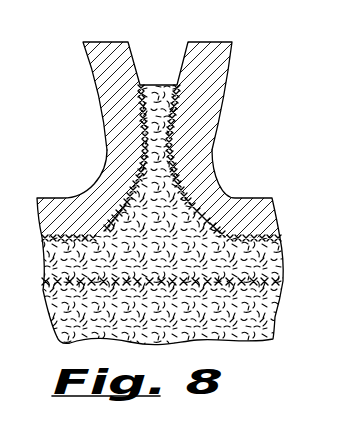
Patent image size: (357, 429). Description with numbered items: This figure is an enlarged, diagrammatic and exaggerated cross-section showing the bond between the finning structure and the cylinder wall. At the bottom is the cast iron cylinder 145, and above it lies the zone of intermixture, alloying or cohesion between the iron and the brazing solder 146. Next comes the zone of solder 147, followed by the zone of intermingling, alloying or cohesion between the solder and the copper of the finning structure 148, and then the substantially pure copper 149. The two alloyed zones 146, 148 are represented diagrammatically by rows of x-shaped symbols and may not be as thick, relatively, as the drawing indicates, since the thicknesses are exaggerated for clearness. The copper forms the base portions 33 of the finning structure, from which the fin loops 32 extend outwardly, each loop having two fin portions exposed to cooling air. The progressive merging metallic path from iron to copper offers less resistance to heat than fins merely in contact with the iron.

The fin loop 32 is at (183, 62).
The base portion 33 is at (48, 197).
The substantially pure copper 149 is at (227, 198).
The zone of intermingling between solder and copper 148 is at (280, 238).
The zone of solder 147 is at (283, 259).
The zone of intermixture between iron and solder 146 is at (281, 282).
The cast iron cylinder 145 is at (276, 322).